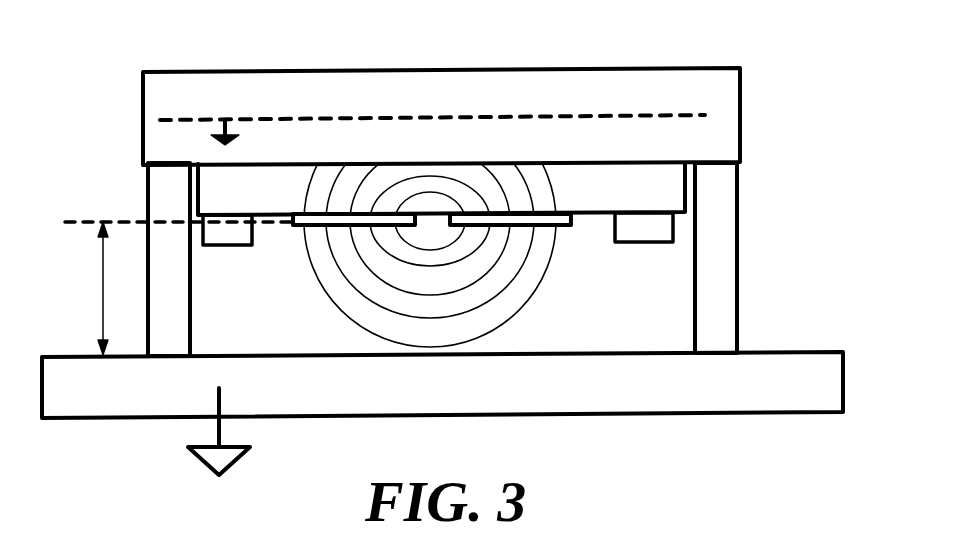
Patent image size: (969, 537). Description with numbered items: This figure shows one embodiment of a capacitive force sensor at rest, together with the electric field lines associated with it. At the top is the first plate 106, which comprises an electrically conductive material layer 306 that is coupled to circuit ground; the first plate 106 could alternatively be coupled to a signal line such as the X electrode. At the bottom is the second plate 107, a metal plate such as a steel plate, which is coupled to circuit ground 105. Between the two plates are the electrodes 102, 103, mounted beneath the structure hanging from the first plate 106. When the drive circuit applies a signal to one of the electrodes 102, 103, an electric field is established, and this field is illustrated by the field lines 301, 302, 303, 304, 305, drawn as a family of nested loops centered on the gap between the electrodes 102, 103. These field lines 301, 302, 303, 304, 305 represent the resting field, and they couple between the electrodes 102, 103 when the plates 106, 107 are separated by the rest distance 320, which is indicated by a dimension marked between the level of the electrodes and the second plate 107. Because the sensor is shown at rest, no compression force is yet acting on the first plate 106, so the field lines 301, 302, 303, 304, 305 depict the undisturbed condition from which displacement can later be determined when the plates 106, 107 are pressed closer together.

The electrode 102 is at (293, 223).
The electrode 103 is at (572, 218).
The circuit ground 105 is at (248, 450).
The first plate 106 is at (722, 140).
The second plate 107 is at (568, 387).
The field line 301 is at (556, 232).
The field line 302 is at (533, 250).
The field line 303 is at (510, 235).
The field line 304 is at (488, 232).
The field line 305 is at (442, 227).
The electrically conductive material layer 306 is at (283, 118).
The rest distance 320 is at (80, 297).